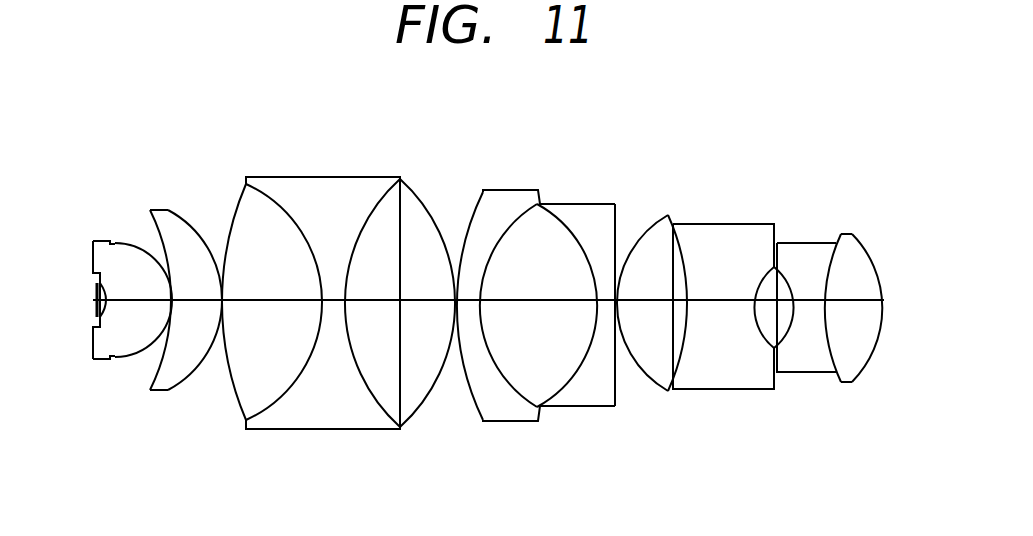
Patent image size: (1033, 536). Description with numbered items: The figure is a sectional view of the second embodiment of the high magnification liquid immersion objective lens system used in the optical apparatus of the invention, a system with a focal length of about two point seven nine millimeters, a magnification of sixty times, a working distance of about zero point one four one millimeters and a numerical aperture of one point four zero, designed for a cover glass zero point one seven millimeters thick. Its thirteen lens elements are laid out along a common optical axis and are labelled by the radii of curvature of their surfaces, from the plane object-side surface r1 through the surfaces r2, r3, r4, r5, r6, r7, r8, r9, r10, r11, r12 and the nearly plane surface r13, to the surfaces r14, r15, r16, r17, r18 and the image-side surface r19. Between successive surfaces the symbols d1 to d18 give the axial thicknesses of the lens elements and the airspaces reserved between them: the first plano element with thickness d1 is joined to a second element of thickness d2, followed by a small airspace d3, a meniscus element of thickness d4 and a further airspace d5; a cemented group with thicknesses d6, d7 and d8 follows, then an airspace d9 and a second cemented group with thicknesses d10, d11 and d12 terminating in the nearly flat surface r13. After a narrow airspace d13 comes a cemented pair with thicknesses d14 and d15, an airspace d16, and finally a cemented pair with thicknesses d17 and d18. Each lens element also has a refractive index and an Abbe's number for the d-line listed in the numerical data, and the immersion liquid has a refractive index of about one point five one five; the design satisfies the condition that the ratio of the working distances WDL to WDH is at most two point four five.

The radius of curvature of first lens surface r1 is at (93, 282).
The radius of curvature of second lens surface r2 is at (105, 283).
The radius of curvature of third lens surface r3 is at (138, 248).
The radius of curvature of fourth lens surface r4 is at (154, 230).
The radius of curvature of fifth lens surface r5 is at (186, 224).
The radius of curvature of sixth lens surface r6 is at (235, 214).
The radius of curvature of seventh lens surface r7 is at (277, 203).
The radius of curvature of eighth lens surface r8 is at (368, 221).
The radius of curvature of ninth lens surface r9 is at (423, 204).
The radius of curvature of tenth lens surface r10 is at (466, 238).
The radius of curvature of eleventh lens surface r11 is at (510, 222).
The radius of curvature of twelfth lens surface r12 is at (560, 216).
The radius of curvature of thirteenth lens surface r13 is at (614, 227).
The radius of curvature of fourteenth lens surface r14 is at (650, 228).
The radius of curvature of fifteenth lens surface r15 is at (679, 243).
The radius of curvature of sixteenth lens surface r16 is at (756, 268).
The radius of curvature of seventeenth lens surface r17 is at (795, 265).
The radius of curvature of eighteenth lens surface r18 is at (833, 248).
The radius of curvature of nineteenth lens surface r19 is at (871, 258).
The thickness of first lens element d1 is at (100, 304).
The thickness of second lens element d2 is at (120, 304).
The first airspace d3 is at (158, 304).
The thickness of third lens element d4 is at (185, 304).
The second airspace d5 is at (218, 304).
The thickness of fourth lens element d6 is at (272, 304).
The thickness of fifth lens element d7 is at (328, 304).
The thickness of sixth lens element d8 is at (390, 304).
The third airspace d9 is at (455, 305).
The thickness of seventh lens element d10 is at (473, 305).
The thickness of eighth lens element d11 is at (528, 305).
The thickness of ninth lens element d12 is at (603, 305).
The fourth airspace d13 is at (627, 305).
The thickness of tenth lens element d14 is at (657, 305).
The thickness of eleventh lens element d15 is at (725, 305).
The fifth airspace d16 is at (755, 305).
The thickness of twelfth lens element d17 is at (803, 305).
The thickness of thirteenth lens element d18 is at (858, 305).